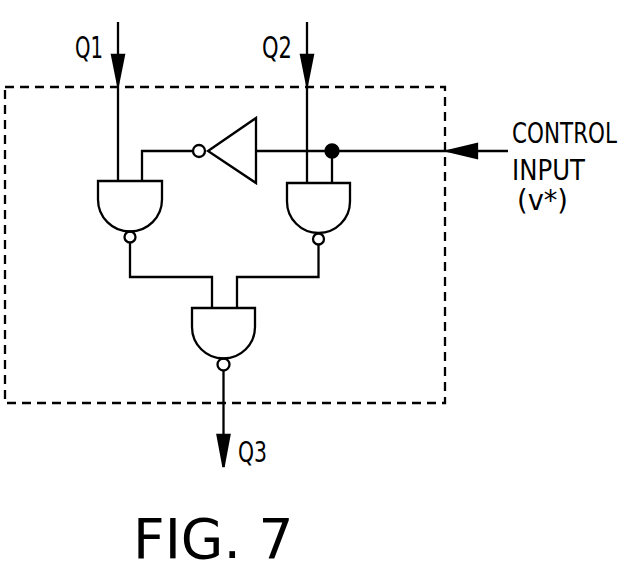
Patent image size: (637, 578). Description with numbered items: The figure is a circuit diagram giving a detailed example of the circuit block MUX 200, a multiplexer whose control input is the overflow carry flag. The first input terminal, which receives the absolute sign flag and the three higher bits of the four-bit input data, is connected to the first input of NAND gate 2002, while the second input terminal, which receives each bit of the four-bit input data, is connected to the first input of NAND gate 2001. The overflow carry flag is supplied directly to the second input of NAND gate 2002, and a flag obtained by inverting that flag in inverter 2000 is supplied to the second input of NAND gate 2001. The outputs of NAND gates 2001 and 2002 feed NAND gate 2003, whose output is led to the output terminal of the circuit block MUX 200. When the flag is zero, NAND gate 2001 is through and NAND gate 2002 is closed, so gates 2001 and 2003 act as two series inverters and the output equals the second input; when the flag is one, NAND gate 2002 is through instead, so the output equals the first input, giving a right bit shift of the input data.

The circuit block (MUX) 200 is at (78, 385).
The inverter 2000 is at (238, 162).
The NAND gate 2001 is at (125, 205).
The NAND gate 2002 is at (325, 202).
The NAND gate 2003 is at (230, 333).